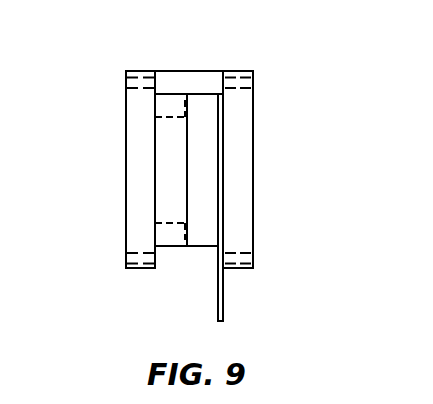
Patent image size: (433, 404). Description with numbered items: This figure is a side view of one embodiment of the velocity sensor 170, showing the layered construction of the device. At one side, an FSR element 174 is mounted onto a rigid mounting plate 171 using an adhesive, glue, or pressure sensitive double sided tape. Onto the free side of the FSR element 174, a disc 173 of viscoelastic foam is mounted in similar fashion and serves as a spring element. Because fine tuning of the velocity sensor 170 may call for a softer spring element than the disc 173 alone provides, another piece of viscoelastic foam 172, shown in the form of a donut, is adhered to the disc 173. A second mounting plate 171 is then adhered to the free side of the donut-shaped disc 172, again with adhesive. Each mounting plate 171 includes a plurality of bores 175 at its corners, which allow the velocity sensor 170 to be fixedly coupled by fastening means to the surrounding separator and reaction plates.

The velocity sensor 170 is at (289, 235).
The mounting plate 171 is at (137, 120).
The donut-shaped disc of viscoelastic foam 172 is at (172, 102).
The disc of viscoelastic foam 173 is at (204, 104).
The FSR element 174 is at (220, 122).
The bores 175 is at (99, 262).